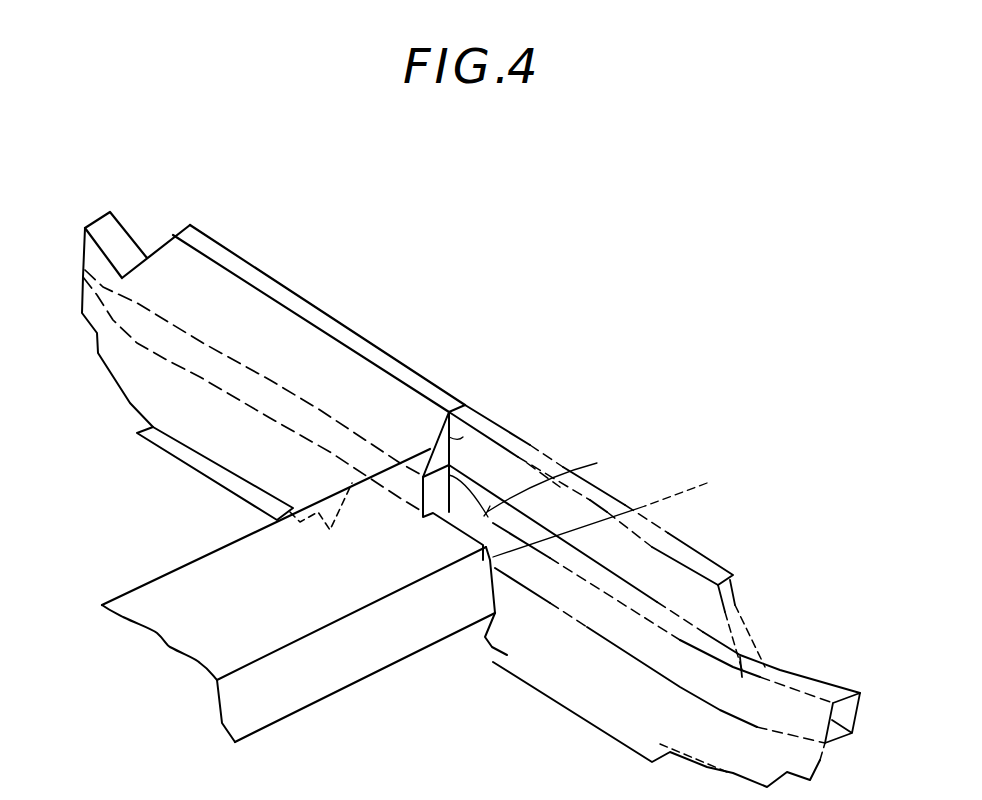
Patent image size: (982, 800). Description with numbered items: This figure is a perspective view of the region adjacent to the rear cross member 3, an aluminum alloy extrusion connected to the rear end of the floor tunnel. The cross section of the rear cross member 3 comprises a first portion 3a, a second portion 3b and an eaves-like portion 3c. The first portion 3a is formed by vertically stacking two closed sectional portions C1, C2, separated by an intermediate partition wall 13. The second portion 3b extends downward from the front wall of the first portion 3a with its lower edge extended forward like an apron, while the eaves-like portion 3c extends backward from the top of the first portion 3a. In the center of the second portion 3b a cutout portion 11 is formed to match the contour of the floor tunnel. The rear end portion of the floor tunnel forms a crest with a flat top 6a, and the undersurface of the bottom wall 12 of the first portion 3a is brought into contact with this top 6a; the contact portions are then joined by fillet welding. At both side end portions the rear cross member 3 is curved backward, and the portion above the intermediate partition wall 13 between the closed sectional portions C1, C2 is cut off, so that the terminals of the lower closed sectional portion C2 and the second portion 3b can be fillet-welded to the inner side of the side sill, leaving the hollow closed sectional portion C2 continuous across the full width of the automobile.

The rear cross member 3 is at (322, 300).
The first portion 3a is at (449, 437).
The second portion 3b is at (158, 406).
The eaves-like portion 3c is at (388, 358).
The top 6a is at (242, 566).
The cutout portion 11 is at (617, 511).
The bottom wall 12 is at (560, 481).
The intermediate partition wall 13 is at (423, 477).
The closed sectional portion C1 is at (460, 453).
The closed sectional portion C2 is at (490, 482).